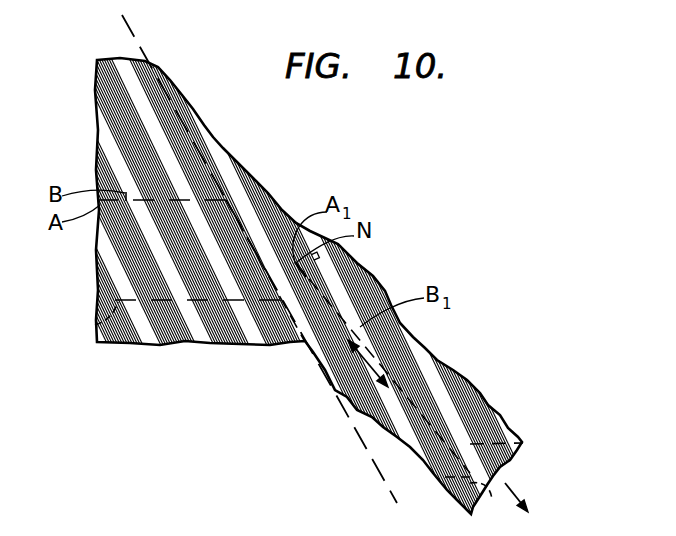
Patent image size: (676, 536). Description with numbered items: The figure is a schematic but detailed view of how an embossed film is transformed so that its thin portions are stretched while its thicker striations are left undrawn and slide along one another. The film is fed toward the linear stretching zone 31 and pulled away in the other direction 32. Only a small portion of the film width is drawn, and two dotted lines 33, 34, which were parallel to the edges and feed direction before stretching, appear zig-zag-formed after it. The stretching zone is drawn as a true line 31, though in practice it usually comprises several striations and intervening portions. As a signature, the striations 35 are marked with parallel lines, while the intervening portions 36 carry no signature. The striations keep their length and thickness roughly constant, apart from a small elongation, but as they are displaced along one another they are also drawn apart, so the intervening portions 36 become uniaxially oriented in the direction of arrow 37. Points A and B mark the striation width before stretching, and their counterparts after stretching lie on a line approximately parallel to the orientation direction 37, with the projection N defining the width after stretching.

The linear stretching zone 31 is at (119, 30).
The pull-away direction 32 is at (517, 496).
The dotted line 33 is at (157, 198).
The dotted line 34 is at (93, 323).
The striations 35 is at (182, 336).
The intervening portions 36 is at (239, 336).
The orientation direction arrow 37 is at (370, 367).